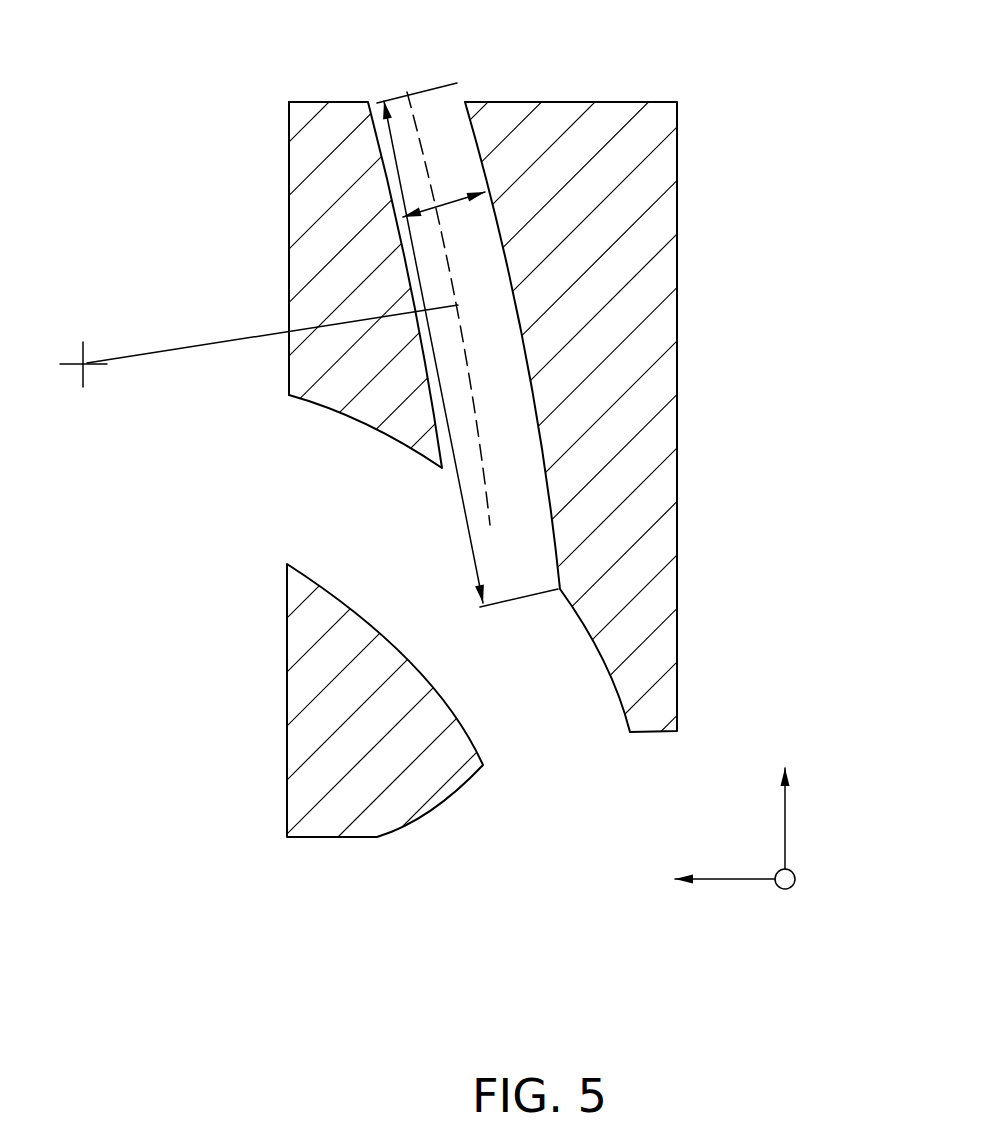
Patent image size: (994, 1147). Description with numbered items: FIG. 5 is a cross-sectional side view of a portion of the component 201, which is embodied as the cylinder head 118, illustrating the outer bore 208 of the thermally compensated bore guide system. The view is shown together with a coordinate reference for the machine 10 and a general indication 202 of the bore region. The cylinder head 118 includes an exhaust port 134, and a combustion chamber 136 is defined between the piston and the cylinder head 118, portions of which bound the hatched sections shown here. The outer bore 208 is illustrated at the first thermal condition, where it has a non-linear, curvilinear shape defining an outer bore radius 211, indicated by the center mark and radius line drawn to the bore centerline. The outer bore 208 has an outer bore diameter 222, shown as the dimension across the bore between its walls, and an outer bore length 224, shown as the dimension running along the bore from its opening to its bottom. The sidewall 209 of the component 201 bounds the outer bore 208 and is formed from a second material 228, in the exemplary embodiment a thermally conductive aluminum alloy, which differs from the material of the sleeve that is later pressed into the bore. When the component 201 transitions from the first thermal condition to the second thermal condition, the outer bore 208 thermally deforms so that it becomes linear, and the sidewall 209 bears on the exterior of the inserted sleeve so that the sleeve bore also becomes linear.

The gas turbine engine 10 is at (717, 843).
The cylinder head 118 is at (429, 573).
The component 201 is at (300, 275).
The exhaust port 134 is at (300, 503).
The combustion chamber 136 is at (423, 837).
The slot opening 202 is at (478, 82).
The outer bore 208 is at (512, 197).
The sidewall 209 is at (500, 228).
The outer bore radius 211 is at (127, 357).
The outer bore diameter 222 is at (440, 205).
The outer bore length 224 is at (398, 177).
The second material 228 is at (290, 217).